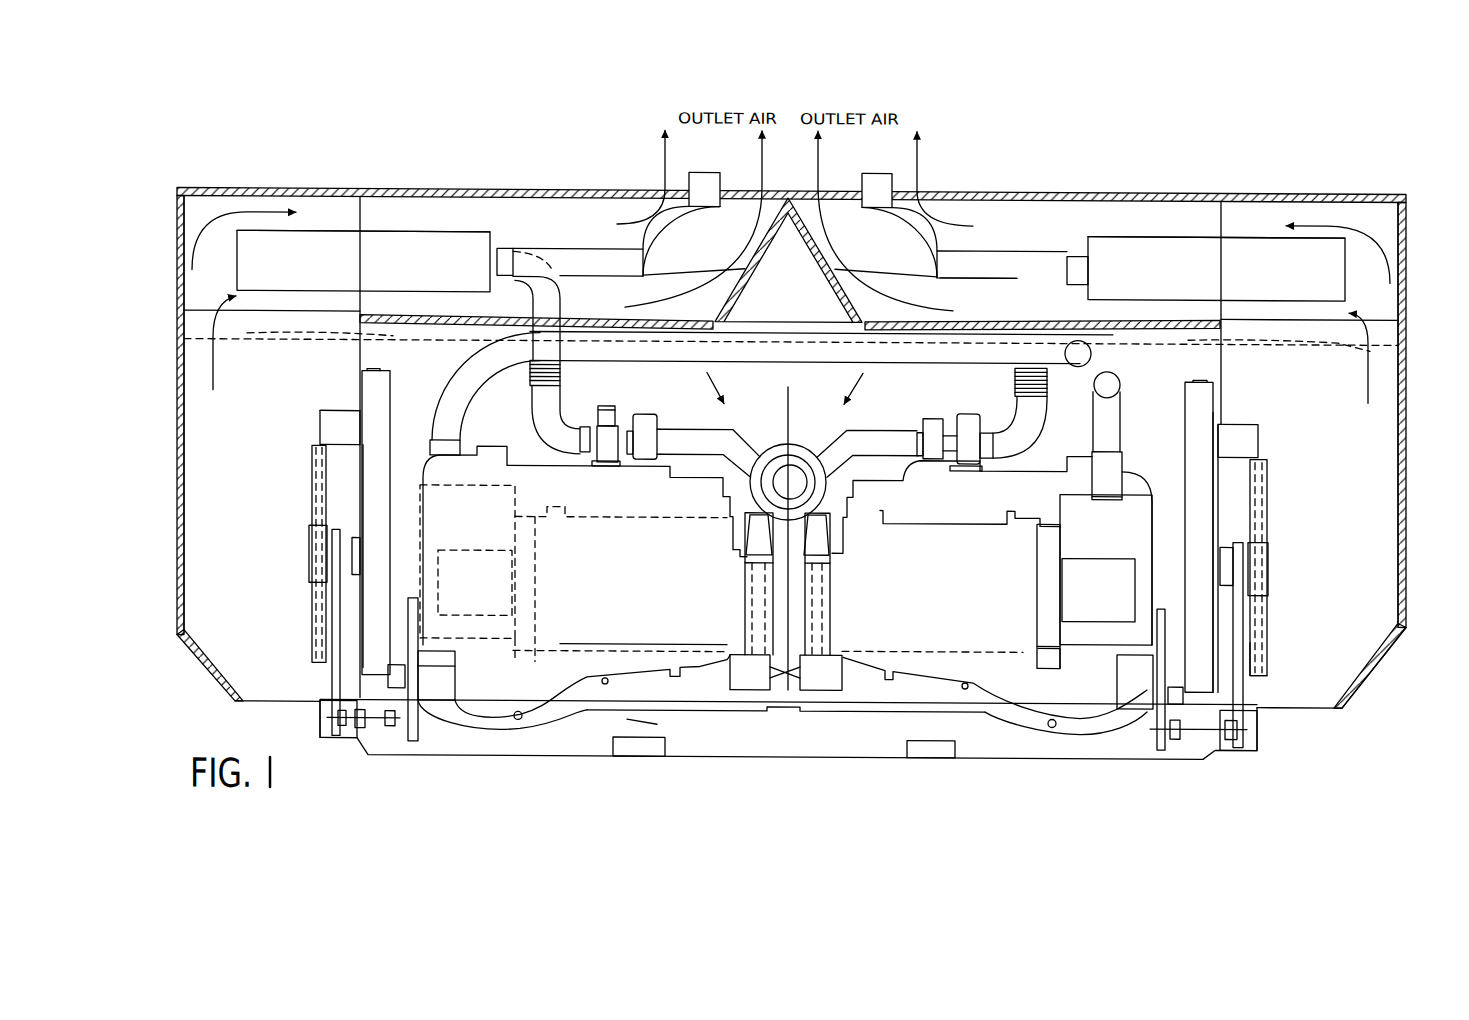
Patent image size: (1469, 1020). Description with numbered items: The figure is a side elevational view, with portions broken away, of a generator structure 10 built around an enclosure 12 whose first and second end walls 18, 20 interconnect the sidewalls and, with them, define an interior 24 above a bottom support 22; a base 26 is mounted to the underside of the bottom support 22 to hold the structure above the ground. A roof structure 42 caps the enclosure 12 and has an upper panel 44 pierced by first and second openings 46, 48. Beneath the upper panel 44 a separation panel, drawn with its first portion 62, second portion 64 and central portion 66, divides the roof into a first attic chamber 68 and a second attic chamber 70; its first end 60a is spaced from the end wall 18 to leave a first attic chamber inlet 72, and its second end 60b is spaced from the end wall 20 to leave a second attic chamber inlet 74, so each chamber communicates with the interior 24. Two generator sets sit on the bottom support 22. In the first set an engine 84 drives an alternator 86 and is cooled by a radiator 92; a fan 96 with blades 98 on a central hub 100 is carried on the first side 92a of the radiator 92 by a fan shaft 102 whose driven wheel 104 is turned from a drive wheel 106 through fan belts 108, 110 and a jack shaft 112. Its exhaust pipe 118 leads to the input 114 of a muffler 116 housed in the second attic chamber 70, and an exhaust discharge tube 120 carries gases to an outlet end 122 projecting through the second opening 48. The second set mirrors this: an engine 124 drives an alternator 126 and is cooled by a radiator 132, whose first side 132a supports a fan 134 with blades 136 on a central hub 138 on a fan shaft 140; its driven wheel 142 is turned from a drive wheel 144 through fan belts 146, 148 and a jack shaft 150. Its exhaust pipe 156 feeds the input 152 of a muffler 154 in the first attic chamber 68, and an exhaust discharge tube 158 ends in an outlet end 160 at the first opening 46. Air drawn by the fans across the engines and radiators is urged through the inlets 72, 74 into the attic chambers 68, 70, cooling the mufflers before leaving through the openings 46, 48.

The generator structure 10 is at (1304, 778).
The enclosure 12 is at (1407, 629).
The first end wall 18 is at (176, 505).
The second end wall 20 is at (1403, 462).
The bottom support 22 is at (1330, 712).
The interior 24 is at (398, 338).
The base 26 is at (743, 762).
The roof structure 42 is at (1239, 188).
The upper panel 44 is at (443, 190).
The first opening 46 is at (630, 190).
The second opening 48 is at (945, 192).
The first end of separation panel 60a is at (353, 313).
The second end of separation panel 60b is at (1218, 318).
The first portion of separation panel 62 is at (613, 327).
The second portion of separation panel 64 is at (1180, 347).
The central portion 66 is at (822, 262).
The first attic chamber 68 is at (561, 237).
The second attic chamber 70 is at (1055, 237).
The first attic chamber inlet 72 is at (347, 313).
The second attic chamber inlet 74 is at (1228, 318).
The engine 84 is at (1135, 466).
The alternator 86 is at (617, 521).
The radiator 92 is at (1197, 420).
The first side of radiator 92a is at (1222, 438).
The fan 96 is at (1264, 649).
The fan blades 98 is at (1260, 477).
The central hub 100 is at (1267, 580).
The fan shaft 102 is at (1227, 545).
The driven wheel 104 is at (1243, 550).
The drive wheel 106 is at (1167, 607).
The fan belt 108 is at (1253, 748).
The fan belt 110 is at (1155, 720).
The jack shaft 112 is at (1193, 730).
The muffler input 114 is at (1082, 248).
The muffler 116 is at (1128, 235).
The exhaust pipe 118 is at (1014, 428).
The exhaust discharge tube 120 is at (957, 262).
The outlet end 122 is at (875, 171).
The engine 124 is at (510, 700).
The alternator 126 is at (944, 611).
The radiator 132 is at (373, 420).
The first side of radiator 132a is at (360, 435).
The fan 134 is at (307, 614).
The fan blades 136 is at (317, 458).
The central hub 138 is at (312, 563).
The fan shaft 140 is at (352, 543).
The driven wheel 142 is at (343, 525).
The drive wheel 144 is at (408, 603).
The fan belt 146 is at (322, 747).
The fan belt 148 is at (420, 737).
The jack shaft 150 is at (377, 727).
The muffler input 152 is at (500, 242).
The muffler 154 is at (333, 233).
The exhaust pipe 156 is at (556, 420).
The exhaust discharge tube 158 is at (568, 262).
The outlet end 160 is at (698, 171).